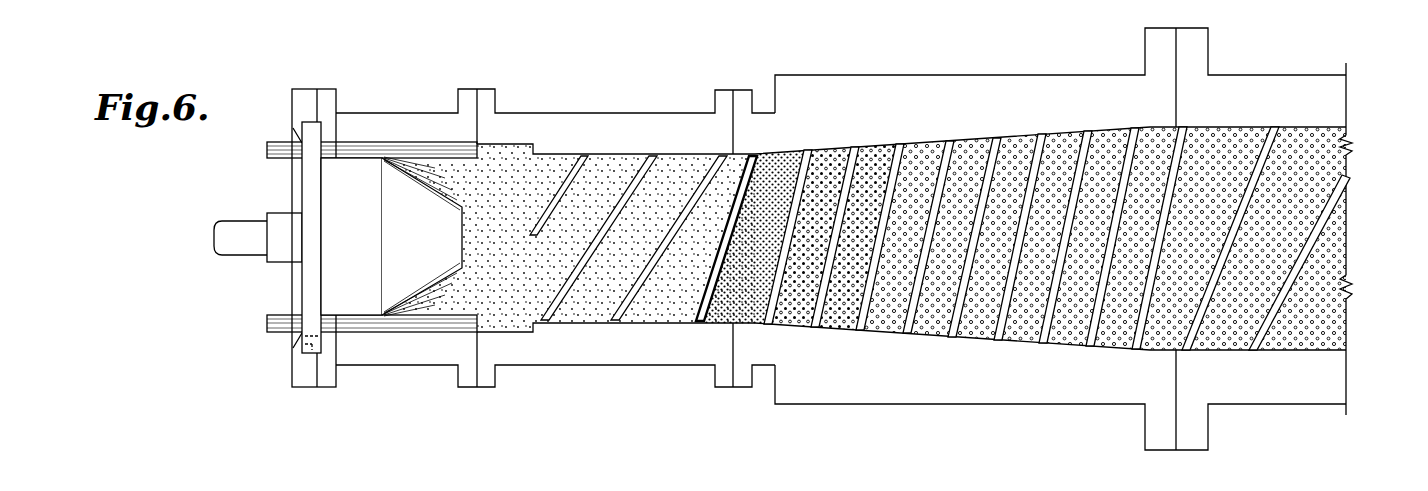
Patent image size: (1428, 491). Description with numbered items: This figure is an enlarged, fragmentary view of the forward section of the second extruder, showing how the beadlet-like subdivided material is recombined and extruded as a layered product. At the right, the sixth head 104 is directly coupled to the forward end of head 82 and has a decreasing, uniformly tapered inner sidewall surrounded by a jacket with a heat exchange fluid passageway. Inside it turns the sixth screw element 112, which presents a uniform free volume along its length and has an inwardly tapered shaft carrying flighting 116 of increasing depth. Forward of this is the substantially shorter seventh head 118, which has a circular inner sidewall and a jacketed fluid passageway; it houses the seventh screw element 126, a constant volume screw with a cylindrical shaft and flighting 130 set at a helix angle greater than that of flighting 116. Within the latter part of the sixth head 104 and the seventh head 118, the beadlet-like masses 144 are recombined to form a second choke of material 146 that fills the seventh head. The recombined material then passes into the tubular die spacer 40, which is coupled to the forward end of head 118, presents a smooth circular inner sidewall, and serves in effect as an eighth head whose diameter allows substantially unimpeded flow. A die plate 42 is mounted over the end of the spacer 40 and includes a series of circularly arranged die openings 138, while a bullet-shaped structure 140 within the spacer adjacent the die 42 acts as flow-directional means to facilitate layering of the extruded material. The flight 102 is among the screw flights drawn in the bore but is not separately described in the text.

The die spacer 40 is at (384, 112).
The die plate 42 is at (305, 178).
The head 82 is at (1318, 72).
The screw flight 102 is at (1322, 206).
The sixth head 104 is at (968, 85).
The sixth screw element 112 is at (907, 333).
The flighting 116 is at (1088, 344).
The seventh head 118 is at (598, 117).
The seventh screw element 126 is at (545, 322).
The flighting 130 is at (700, 312).
The die openings 138 is at (294, 352).
The bullet-shaped structure 140 is at (340, 271).
The beadlet-like masses 144 is at (1030, 128).
The second choke of material 146 is at (622, 153).